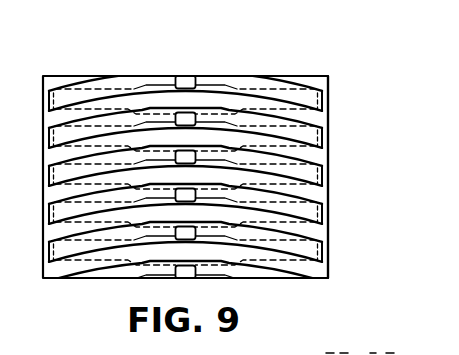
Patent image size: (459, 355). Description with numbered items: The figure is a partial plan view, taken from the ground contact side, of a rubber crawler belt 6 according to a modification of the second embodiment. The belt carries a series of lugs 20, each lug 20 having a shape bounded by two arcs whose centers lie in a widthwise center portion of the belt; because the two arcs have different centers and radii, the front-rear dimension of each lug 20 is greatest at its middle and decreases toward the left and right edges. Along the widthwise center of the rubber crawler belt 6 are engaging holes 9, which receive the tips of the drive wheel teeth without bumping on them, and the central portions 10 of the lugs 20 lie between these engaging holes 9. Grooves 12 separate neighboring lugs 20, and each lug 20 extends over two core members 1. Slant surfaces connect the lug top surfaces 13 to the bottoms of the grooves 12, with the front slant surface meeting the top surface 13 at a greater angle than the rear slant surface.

The core member 1 is at (77, 104).
The rubber crawler belt 6 is at (336, 219).
The engaging hole 9 is at (208, 116).
The central portion of lug 10 is at (186, 96).
The groove 12 is at (313, 196).
The lug top surface 13 is at (316, 127).
The lug 20 is at (325, 180).